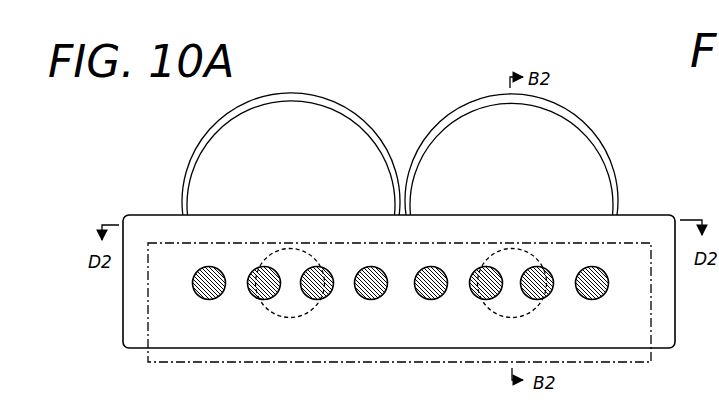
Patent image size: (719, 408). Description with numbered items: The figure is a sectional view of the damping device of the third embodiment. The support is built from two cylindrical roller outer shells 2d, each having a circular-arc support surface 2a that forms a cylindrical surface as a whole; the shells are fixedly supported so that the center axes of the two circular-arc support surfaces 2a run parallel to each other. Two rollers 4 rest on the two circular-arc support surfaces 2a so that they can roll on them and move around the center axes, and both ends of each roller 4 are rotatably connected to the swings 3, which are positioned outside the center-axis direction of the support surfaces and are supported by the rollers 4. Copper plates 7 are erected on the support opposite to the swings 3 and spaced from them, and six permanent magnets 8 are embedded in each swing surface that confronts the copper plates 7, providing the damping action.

The circular-arc support surface 2a is at (335, 104).
The cylindrical roller outer shell 2d is at (377, 132).
The swing 3 is at (425, 215).
The roller 4 is at (299, 248).
The copper plate 7 is at (631, 258).
The permanent magnet 8 is at (258, 299).